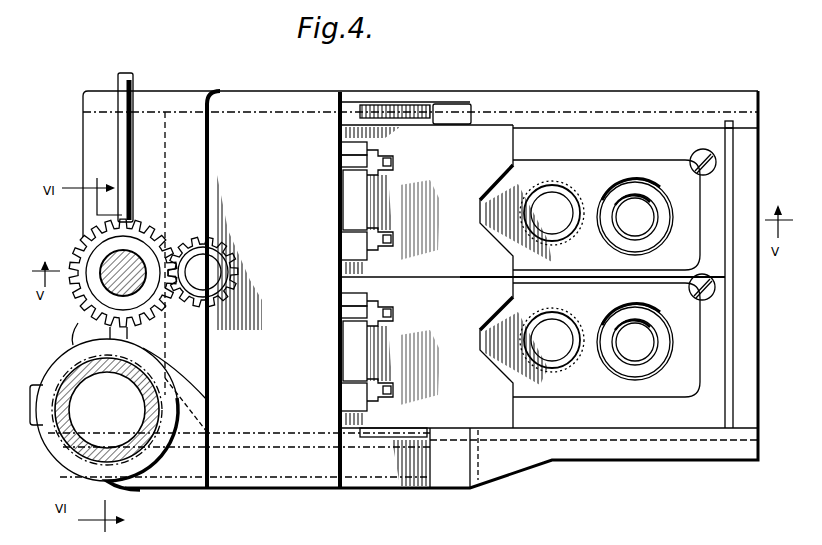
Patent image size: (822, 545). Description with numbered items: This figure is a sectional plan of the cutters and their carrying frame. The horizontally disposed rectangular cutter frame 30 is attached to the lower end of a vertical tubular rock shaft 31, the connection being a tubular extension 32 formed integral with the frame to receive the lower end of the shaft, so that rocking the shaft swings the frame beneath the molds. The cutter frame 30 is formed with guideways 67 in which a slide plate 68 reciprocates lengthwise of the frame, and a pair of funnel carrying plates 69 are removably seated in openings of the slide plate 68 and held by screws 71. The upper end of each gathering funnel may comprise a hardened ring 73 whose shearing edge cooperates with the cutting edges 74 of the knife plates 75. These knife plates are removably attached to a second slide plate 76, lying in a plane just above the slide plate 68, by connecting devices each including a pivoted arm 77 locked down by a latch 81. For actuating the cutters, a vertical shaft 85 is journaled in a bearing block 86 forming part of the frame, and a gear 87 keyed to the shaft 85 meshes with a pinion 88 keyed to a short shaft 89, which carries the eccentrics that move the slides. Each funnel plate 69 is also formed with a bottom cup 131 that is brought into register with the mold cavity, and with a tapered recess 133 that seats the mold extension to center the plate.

The cutter frame 30 is at (637, 448).
The rock shaft 31 is at (68, 364).
The tubular extension 32 is at (82, 462).
The guideways 67 is at (648, 111).
The slide plate 68 is at (698, 415).
The funnel carrying plates 69 is at (614, 142).
The screws 71 is at (697, 157).
The ring 73 is at (574, 323).
The cutting edges 74 is at (503, 315).
The knife plates 75 is at (483, 140).
The slide plate 76 is at (377, 286).
The arm 77 is at (368, 251).
The latch 81 is at (378, 165).
The vertical shaft 85 is at (107, 263).
The bearing block 86 is at (121, 147).
The gear 87 is at (82, 293).
The pinion 88 is at (237, 271).
The short shaft 89 is at (200, 265).
The bottom cup 131 is at (640, 223).
The recess 133 is at (640, 365).